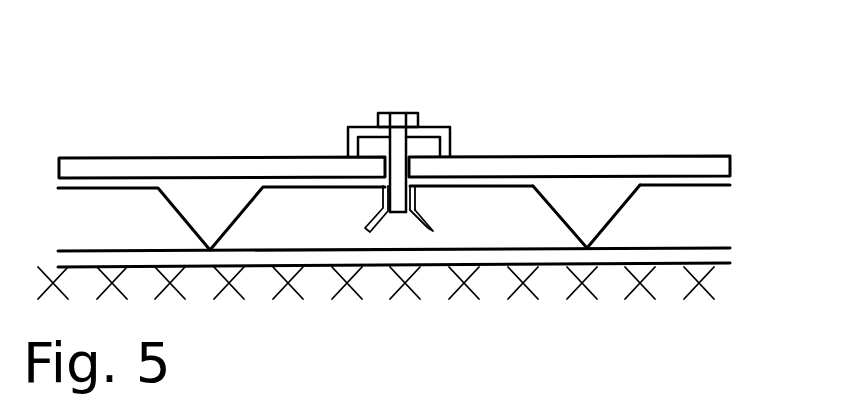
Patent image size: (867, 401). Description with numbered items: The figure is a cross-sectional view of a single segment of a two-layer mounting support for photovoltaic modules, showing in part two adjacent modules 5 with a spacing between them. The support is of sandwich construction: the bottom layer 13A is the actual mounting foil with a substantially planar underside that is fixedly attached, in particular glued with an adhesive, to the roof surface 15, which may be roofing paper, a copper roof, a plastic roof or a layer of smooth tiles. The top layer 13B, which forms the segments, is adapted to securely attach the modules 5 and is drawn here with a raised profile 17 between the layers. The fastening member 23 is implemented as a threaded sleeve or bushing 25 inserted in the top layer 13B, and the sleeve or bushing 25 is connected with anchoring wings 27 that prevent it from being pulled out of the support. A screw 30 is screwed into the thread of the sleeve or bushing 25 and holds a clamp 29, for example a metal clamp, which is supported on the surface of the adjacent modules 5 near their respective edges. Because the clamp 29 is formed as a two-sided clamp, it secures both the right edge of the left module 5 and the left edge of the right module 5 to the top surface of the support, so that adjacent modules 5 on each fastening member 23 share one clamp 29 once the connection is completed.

The photovoltaic module 5 is at (113, 165).
The bottom layer 13A is at (720, 257).
The top layer 13B is at (720, 210).
The roof surface 15 is at (502, 278).
The corrugation rib 17 is at (605, 207).
The fastening member 23 is at (382, 200).
The threaded sleeve or bushing 25 is at (416, 200).
The anchoring wing 27 is at (434, 230).
The clamp 29 is at (450, 142).
The screw 30 is at (395, 112).